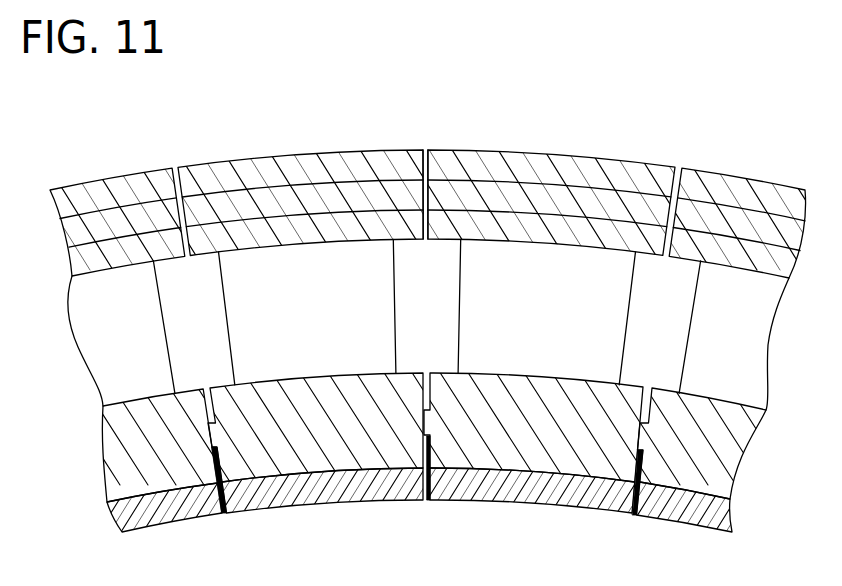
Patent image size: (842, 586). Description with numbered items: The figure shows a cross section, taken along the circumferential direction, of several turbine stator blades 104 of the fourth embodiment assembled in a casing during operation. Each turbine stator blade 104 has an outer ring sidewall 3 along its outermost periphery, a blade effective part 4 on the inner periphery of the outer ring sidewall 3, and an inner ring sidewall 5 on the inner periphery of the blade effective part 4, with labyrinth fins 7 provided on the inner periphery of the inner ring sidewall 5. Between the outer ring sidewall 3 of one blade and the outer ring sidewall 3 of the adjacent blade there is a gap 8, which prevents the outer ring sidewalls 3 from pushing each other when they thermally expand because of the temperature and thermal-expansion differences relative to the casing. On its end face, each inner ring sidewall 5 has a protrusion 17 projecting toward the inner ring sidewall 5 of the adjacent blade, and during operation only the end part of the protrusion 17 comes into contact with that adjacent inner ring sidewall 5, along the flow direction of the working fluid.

The turbine stator blade 104 is at (252, 124).
The outer ring sidewall 3 is at (88, 233).
The blade effective part 4 is at (105, 340).
The inner ring sidewall 5 is at (123, 462).
The labyrinth fins 7 is at (128, 512).
The gap 8 is at (427, 150).
The protrusion 17 is at (432, 438).